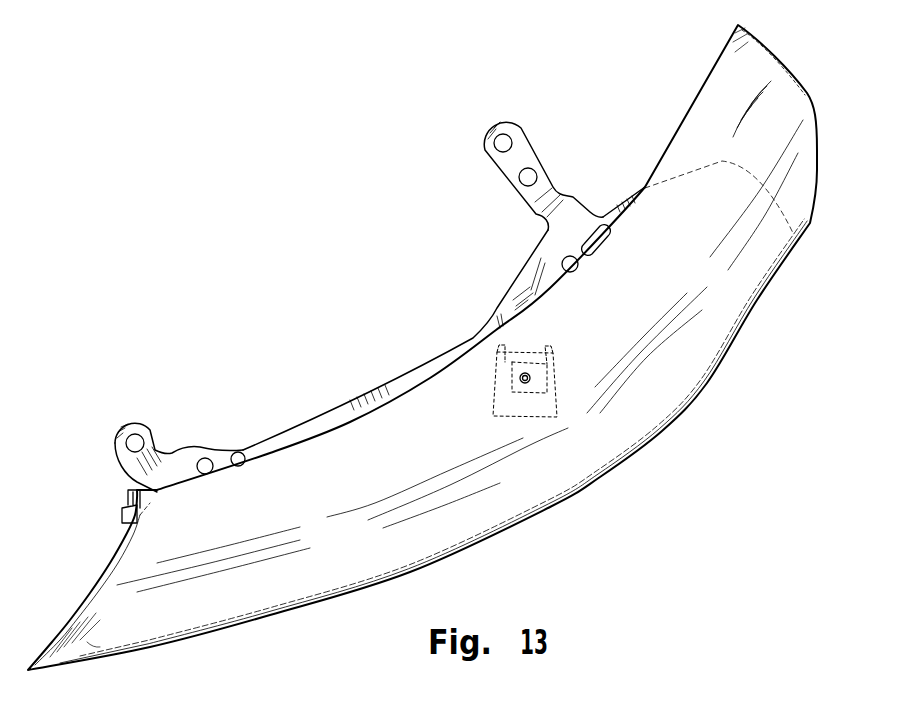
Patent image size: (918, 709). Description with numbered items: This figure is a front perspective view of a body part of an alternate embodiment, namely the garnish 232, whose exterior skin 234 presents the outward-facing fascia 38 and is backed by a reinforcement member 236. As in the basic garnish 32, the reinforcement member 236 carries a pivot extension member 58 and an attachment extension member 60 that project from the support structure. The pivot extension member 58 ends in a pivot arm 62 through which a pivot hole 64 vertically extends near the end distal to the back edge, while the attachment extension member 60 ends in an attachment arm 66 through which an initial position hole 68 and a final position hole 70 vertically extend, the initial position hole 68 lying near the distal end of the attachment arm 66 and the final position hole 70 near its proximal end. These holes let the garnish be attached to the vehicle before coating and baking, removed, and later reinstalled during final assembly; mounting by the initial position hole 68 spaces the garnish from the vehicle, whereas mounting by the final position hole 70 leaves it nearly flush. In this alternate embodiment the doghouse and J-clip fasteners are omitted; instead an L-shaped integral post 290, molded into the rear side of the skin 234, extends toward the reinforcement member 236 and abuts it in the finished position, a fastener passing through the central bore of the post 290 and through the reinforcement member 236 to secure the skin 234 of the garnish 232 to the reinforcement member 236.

The garnish 32 is at (230, 137).
The fascia 38 is at (800, 168).
The pivot extension member 58 is at (150, 424).
The attachment extension member 60 is at (524, 174).
The pivot arm 62 is at (142, 425).
The pivot hole 64 is at (115, 445).
The attachment arm 66 is at (522, 155).
The initial position hole 68 is at (492, 168).
The final position hole 70 is at (512, 188).
The garnish 232 is at (718, 102).
The skin 234 is at (748, 60).
The reinforcement member 236 is at (398, 383).
The post 290 is at (530, 417).